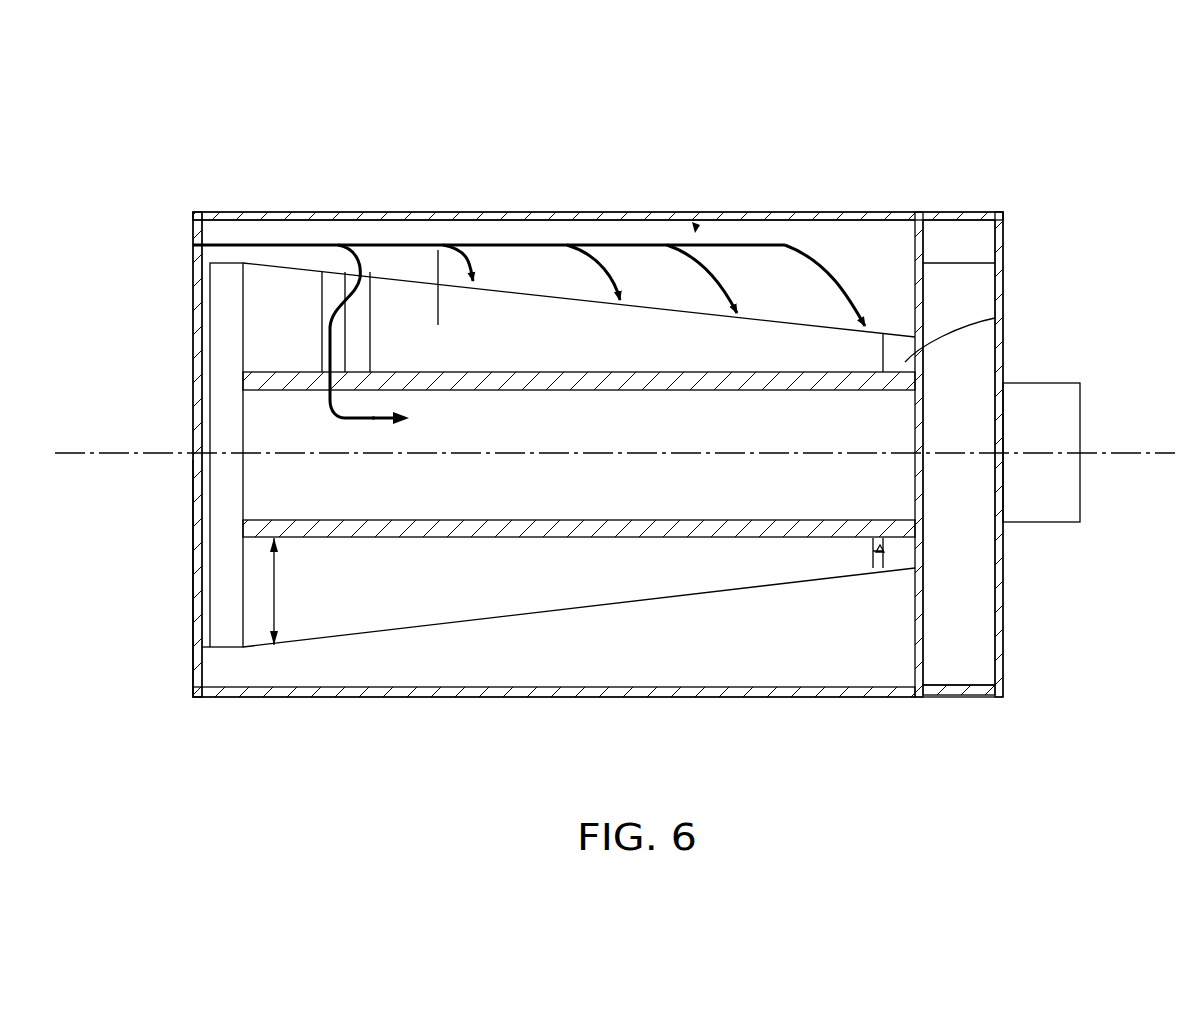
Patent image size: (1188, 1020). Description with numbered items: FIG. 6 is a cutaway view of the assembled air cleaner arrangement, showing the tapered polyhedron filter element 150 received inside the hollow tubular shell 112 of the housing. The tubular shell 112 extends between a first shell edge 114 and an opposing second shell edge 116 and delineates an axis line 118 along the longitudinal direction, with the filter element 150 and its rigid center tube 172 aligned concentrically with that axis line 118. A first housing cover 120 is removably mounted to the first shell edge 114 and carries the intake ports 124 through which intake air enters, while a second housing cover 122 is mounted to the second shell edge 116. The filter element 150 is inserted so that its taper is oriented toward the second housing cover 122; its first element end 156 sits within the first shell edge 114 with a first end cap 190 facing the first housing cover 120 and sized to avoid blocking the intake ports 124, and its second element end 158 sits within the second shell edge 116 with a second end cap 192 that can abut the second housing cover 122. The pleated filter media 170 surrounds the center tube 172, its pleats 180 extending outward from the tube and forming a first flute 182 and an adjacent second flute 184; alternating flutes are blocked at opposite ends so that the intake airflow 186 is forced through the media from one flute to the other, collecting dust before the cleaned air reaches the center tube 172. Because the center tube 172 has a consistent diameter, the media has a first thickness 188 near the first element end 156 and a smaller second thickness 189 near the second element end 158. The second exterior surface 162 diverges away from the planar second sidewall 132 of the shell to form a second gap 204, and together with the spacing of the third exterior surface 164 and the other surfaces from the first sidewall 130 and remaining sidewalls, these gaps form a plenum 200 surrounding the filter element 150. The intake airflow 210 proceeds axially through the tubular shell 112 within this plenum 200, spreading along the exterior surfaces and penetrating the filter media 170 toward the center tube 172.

The tubular shell 112 is at (912, 212).
The first shell edge 114 is at (193, 315).
The second shell edge 116 is at (923, 263).
The axis line 118 is at (1130, 445).
The first housing cover 120 is at (193, 552).
The second housing cover 122 is at (1003, 610).
The intake ports 124 is at (193, 238).
The first sidewall 130 is at (580, 212).
The second sidewall 132 is at (477, 700).
The filter element 150 is at (607, 327).
The first element end 156 is at (290, 620).
The second element end 158 is at (857, 547).
The second exterior surface 162 is at (588, 612).
The third exterior surface 164 is at (543, 295).
The filter media 170 is at (437, 250).
The center tube 172 is at (815, 370).
The pleats 180 is at (387, 292).
The first flute 182 is at (362, 345).
The second flute 184 is at (332, 295).
The intake airflow 186 is at (345, 418).
The first thickness 188 is at (276, 585).
The second thickness 189 is at (883, 552).
The first end cap 190 is at (227, 412).
The second end cap 192 is at (995, 318).
The plenum 200 is at (697, 230).
The second gap 204 is at (709, 660).
The intake airflow 210 is at (362, 243).